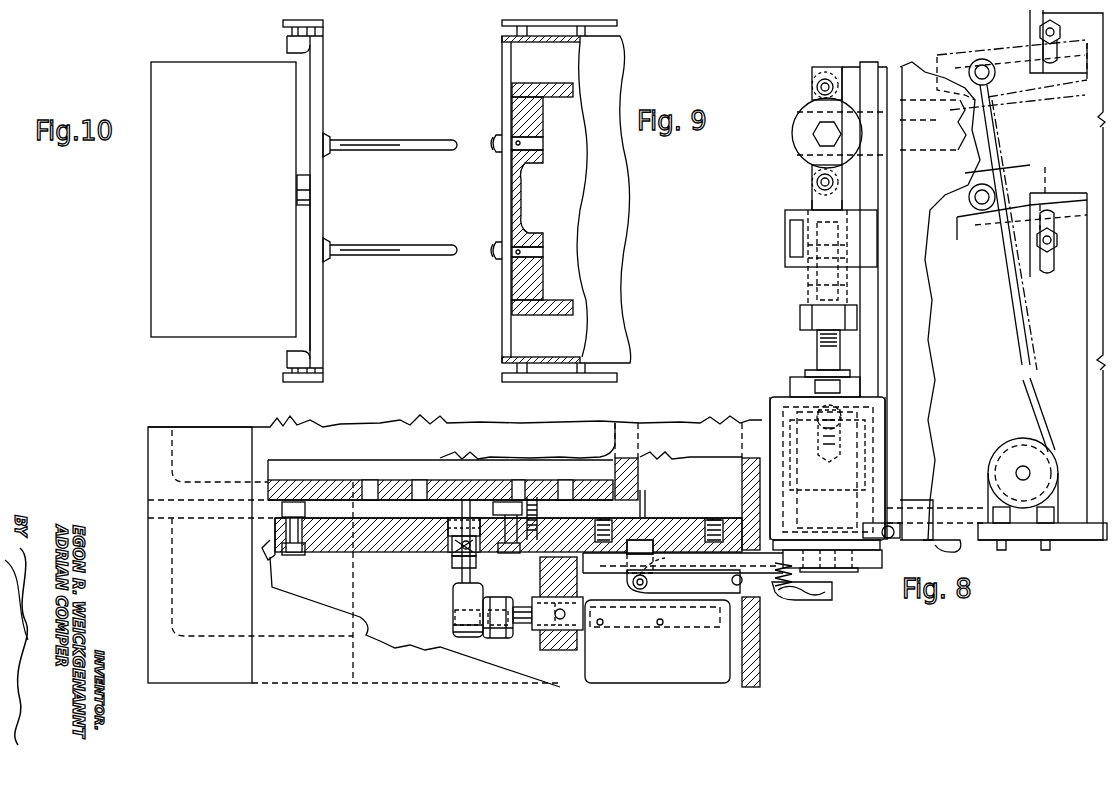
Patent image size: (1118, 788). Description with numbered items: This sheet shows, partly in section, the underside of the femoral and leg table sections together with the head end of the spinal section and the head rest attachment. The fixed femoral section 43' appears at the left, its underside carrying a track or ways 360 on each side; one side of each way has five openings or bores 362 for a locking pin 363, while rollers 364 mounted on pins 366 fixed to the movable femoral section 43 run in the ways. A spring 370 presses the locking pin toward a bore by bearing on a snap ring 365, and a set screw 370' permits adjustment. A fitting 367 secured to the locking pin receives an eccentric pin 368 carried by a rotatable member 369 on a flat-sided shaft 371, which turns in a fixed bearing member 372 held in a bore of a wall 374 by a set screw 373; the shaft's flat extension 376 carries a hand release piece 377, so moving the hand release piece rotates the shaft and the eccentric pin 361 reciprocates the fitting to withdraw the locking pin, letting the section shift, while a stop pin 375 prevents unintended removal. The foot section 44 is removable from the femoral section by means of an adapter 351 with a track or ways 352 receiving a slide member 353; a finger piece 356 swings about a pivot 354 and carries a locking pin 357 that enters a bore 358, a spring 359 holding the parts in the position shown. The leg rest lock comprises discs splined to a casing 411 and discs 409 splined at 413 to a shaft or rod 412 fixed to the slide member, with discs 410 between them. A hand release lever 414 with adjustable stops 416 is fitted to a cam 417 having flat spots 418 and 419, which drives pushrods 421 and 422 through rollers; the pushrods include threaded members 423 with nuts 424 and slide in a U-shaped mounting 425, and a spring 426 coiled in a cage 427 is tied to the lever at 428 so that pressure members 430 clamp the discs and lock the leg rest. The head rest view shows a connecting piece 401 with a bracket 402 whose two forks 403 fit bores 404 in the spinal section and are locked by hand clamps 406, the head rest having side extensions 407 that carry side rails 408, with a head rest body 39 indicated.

In FIG. 10, the box 39 is at (223, 199).
In FIG. 10, the connecting piece 401 is at (312, 187).
In FIG. 10, the bracket 402 is at (325, 220).
In FIG. 10, the forks 403 is at (414, 249).
In FIG. 9, the bores 404 is at (545, 145).
In FIG. 9, the hand clamps 406 is at (493, 267).
In FIG. 10, the side extensions 407 is at (325, 334).
In FIG. 10, the side rails 408 is at (318, 30).
In FIG. 8, the movable femoral section 43 is at (406, 600).
In FIG. 8, the fixed femoral section 43' is at (413, 569).
In FIG. 8, the foot section 44 is at (919, 422).
In FIG. 8, the adapter 351 is at (737, 535).
In FIG. 8, the track or ways 352 is at (720, 515).
In FIG. 8, the slide member 353 is at (857, 569).
In FIG. 8, the pivot 354 is at (728, 592).
In FIG. 8, the finger piece 356 is at (792, 601).
In FIG. 8, the locking pin 357 is at (678, 505).
In FIG. 8, the bore 358 is at (677, 485).
In FIG. 8, the spring 359 is at (790, 563).
In FIG. 8, the track or ways 360 is at (400, 510).
In FIG. 8, the eccentric pin 361 is at (636, 507).
In FIG. 8, the openings or bores 362 is at (522, 483).
In FIG. 8, the locking pin 363 is at (426, 500).
In FIG. 8, the rollers 364 is at (305, 508).
In FIG. 8, the snap ring 365 is at (452, 573).
In FIG. 8, the pins 366 is at (302, 556).
In FIG. 8, the fitting 367 is at (453, 596).
In FIG. 8, the eccentric pin 368 is at (514, 610).
In FIG. 8, the rotatable member 369 is at (497, 639).
In FIG. 8, the spring 370 is at (508, 551).
In FIG. 8, the set screw 370' is at (488, 548).
In FIG. 8, the shaft 371 is at (525, 630).
In FIG. 8, the bearing member 372 is at (586, 632).
In FIG. 8, the set screw 373 is at (579, 650).
In FIG. 8, the wall 374 is at (563, 590).
In FIG. 8, the stop pin 375 is at (523, 509).
In FIG. 8, the flat extension 376 is at (665, 630).
In FIG. 8, the hand release piece 377 is at (672, 681).
In FIG. 8, the discs 409 is at (858, 418).
In FIG. 8, the discs 410 is at (858, 405).
In FIG. 8, the casing 411 is at (875, 490).
In FIG. 8, the shaft or rod 412 is at (802, 447).
In FIG. 8, the spline 413 is at (806, 393).
In FIG. 8, the hand release lever 414 is at (1023, 193).
In FIG. 8, the adjustable stops 416 is at (1040, 30).
In FIG. 8, the cam 417 is at (800, 148).
In FIG. 8, the flat spot 418 is at (814, 107).
In FIG. 8, the flat spot 419 is at (812, 168).
In FIG. 8, the pushrod 421 is at (817, 66).
In FIG. 8, the pushrod 422 is at (812, 203).
In FIG. 8, the threaded members 423 is at (817, 339).
In FIG. 8, the nuts 424 is at (800, 314).
In FIG. 8, the U-shaped mounting 425 is at (785, 246).
In FIG. 8, the spring 426 is at (1020, 440).
In FIG. 8, the cage 427 is at (1058, 458).
In FIG. 8, the tie point 428 is at (976, 210).
In FIG. 8, the pressure members 430 is at (850, 385).